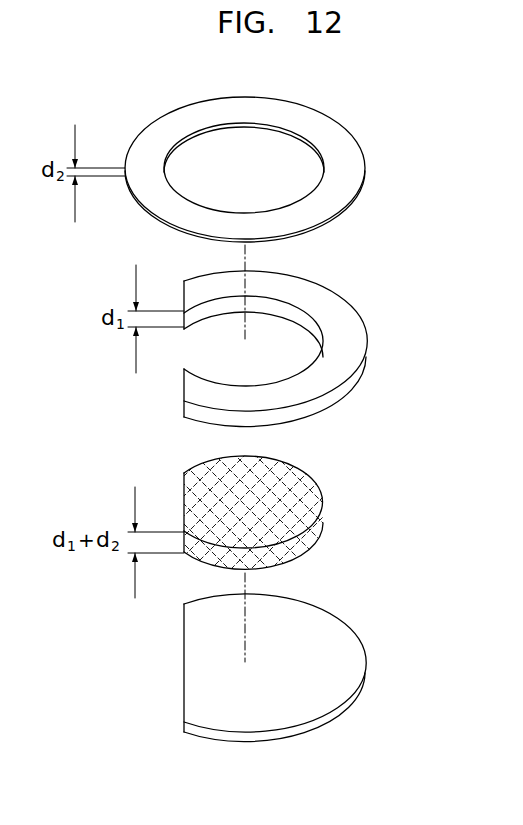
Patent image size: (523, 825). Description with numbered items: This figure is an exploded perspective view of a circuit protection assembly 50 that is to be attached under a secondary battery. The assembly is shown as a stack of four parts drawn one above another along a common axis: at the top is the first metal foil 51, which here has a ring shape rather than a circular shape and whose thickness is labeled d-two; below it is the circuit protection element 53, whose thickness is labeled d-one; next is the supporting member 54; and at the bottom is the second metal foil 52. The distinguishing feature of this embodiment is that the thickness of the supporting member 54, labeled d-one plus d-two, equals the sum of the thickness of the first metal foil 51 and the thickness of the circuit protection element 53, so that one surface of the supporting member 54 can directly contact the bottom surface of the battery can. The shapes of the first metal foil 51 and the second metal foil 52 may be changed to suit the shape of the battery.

The circuit protection assembly 50 is at (272, 442).
The first metal foil 51 is at (355, 160).
The second metal foil 52 is at (355, 665).
The circuit protection element 53 is at (352, 342).
The supporting member 54 is at (312, 503).